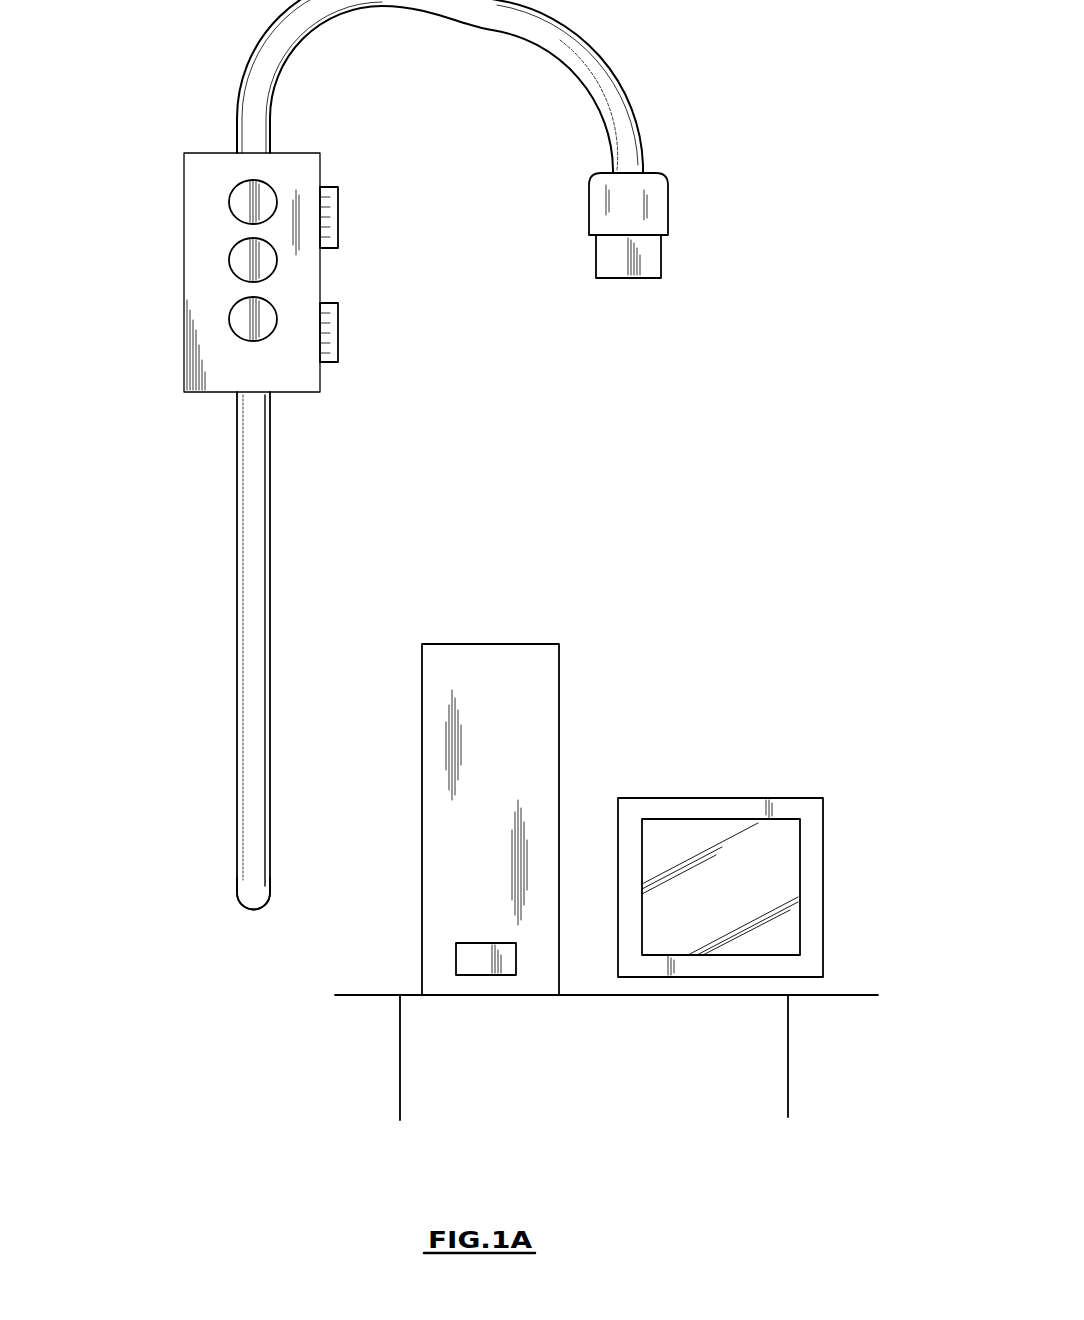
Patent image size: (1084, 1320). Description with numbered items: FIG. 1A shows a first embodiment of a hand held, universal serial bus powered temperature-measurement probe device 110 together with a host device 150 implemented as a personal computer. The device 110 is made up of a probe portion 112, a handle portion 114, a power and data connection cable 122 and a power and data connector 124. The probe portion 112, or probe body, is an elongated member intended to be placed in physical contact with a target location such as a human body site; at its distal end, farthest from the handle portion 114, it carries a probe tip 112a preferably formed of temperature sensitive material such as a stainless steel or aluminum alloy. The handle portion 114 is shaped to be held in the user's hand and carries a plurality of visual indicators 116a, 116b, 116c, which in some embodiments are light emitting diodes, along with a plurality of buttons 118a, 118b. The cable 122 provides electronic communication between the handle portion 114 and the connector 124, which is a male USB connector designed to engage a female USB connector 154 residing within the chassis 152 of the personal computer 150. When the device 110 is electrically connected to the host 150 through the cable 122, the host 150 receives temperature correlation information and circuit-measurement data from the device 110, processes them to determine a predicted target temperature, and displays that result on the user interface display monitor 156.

The temperature-measurement probe device 110 is at (171, 79).
The probe portion 112 is at (243, 580).
The probe tip 112a is at (245, 880).
The handle portion 114 is at (305, 173).
The visual indicator 116a is at (229, 205).
The visual indicator 116b is at (229, 263).
The visual indicator 116c is at (229, 322).
The button 118a is at (335, 218).
The button 118b is at (335, 333).
The power and data connection cable 122 is at (600, 68).
The power and data connector 124 is at (648, 258).
The host device 150 is at (695, 676).
The chassis 152 is at (524, 752).
The female USB connector 154 is at (483, 962).
The user interface display monitor 156 is at (808, 925).